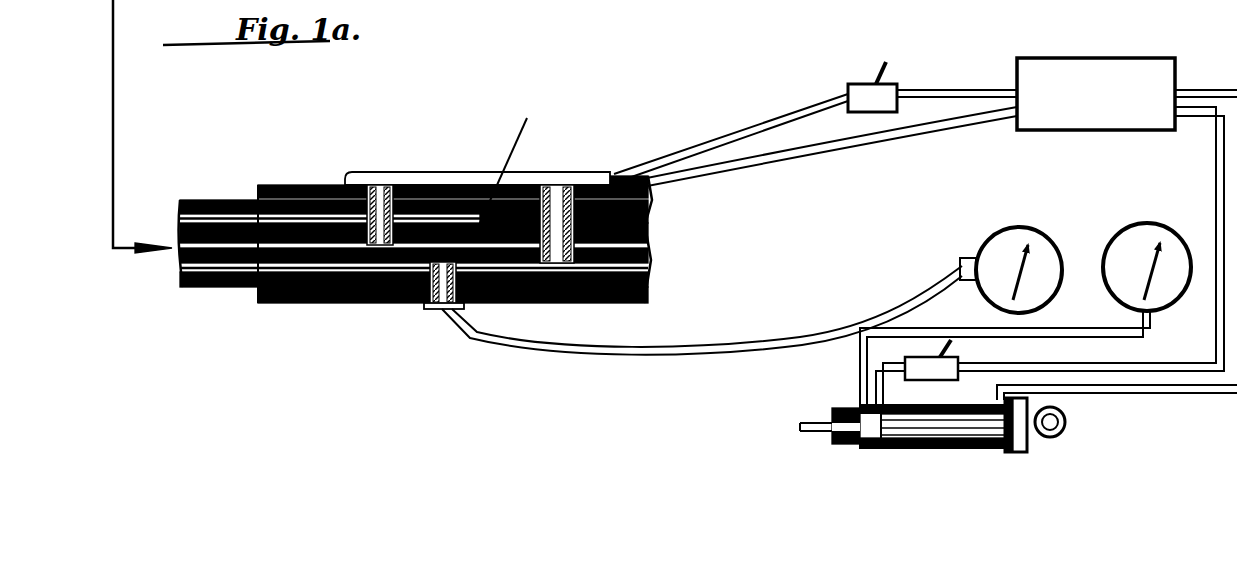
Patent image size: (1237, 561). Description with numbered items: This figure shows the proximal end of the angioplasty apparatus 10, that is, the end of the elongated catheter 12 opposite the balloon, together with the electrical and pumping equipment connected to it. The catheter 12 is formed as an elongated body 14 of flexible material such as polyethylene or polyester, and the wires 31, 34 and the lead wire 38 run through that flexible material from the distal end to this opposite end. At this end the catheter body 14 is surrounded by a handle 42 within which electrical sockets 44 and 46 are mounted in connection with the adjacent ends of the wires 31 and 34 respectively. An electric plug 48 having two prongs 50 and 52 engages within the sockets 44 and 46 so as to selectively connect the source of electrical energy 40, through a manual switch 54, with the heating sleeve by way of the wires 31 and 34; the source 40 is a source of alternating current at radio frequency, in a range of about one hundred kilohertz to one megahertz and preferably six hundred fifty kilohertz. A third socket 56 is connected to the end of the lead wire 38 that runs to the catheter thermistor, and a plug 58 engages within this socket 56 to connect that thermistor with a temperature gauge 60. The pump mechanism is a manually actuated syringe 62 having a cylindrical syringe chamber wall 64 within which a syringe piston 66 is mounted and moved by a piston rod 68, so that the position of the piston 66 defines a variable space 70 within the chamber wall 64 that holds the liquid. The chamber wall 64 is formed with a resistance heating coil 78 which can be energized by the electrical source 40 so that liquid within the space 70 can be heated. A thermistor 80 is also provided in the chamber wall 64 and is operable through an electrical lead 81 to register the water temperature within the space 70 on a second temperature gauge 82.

The angioplasty apparatus 10 is at (312, 320).
The elongated catheter 12 is at (207, 192).
The catheter body 14 is at (181, 284).
The wire 31 is at (511, 161).
The wire 34 is at (234, 200).
The lead wire 38 is at (240, 285).
The source of electrical energy 40 is at (1176, 42).
The handle 42 is at (572, 300).
The electrical socket 44 is at (400, 178).
The electrical socket 46 is at (541, 180).
The electric plug 48 is at (452, 178).
The prong 50 is at (372, 185).
The prong 52 is at (592, 174).
The manual switch 54 is at (893, 87).
The third socket 56 is at (420, 308).
The plug 58 is at (447, 310).
The temperature gauge 60 is at (1010, 232).
The syringe 62 is at (876, 454).
The cylindrical syringe chamber wall 64 is at (1026, 452).
The syringe piston 66 is at (840, 410).
The piston rod 68 is at (1068, 423).
The variable space 70 is at (842, 441).
The resistance heating coil 78 is at (936, 450).
The thermistor 80 is at (862, 404).
The electrical lead 81 is at (1100, 326).
The temperature gauge 82 is at (1133, 230).